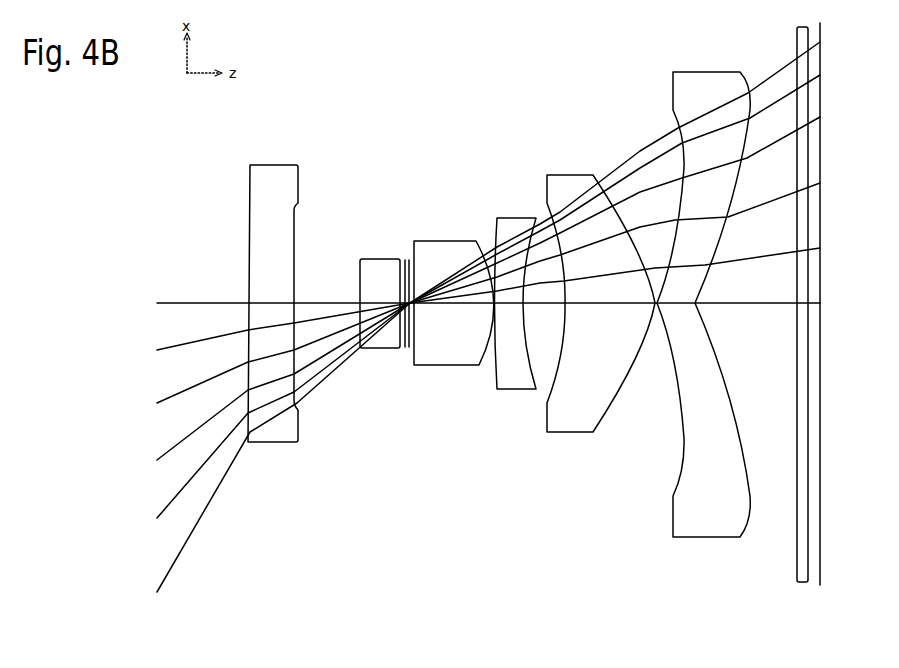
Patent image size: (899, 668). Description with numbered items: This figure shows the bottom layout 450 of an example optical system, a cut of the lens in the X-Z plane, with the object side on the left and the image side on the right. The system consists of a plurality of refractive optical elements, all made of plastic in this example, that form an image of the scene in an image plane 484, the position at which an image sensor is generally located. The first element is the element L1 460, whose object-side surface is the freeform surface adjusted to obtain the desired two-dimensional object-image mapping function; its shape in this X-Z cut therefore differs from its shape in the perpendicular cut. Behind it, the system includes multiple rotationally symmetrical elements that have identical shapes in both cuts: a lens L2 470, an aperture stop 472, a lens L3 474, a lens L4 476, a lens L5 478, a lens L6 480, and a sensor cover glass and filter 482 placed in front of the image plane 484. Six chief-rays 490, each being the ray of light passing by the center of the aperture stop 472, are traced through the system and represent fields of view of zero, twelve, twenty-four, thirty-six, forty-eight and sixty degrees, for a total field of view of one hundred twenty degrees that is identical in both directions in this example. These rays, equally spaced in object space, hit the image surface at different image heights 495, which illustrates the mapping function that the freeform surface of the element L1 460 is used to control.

The bottom layout 450 is at (488, 162).
The element L1 460 is at (273, 290).
The lens L2 470 is at (380, 291).
The aperture stop 472 is at (403, 351).
The lens L3 474 is at (454, 291).
The lens L4 476 is at (517, 291).
The lens L5 478 is at (601, 291).
The lens L6 480 is at (703, 294).
The sensor cover glass and filter 482 is at (793, 292).
The image plane 484 is at (841, 295).
The chief-rays 490 is at (268, 447).
The image heights 495 is at (638, 172).